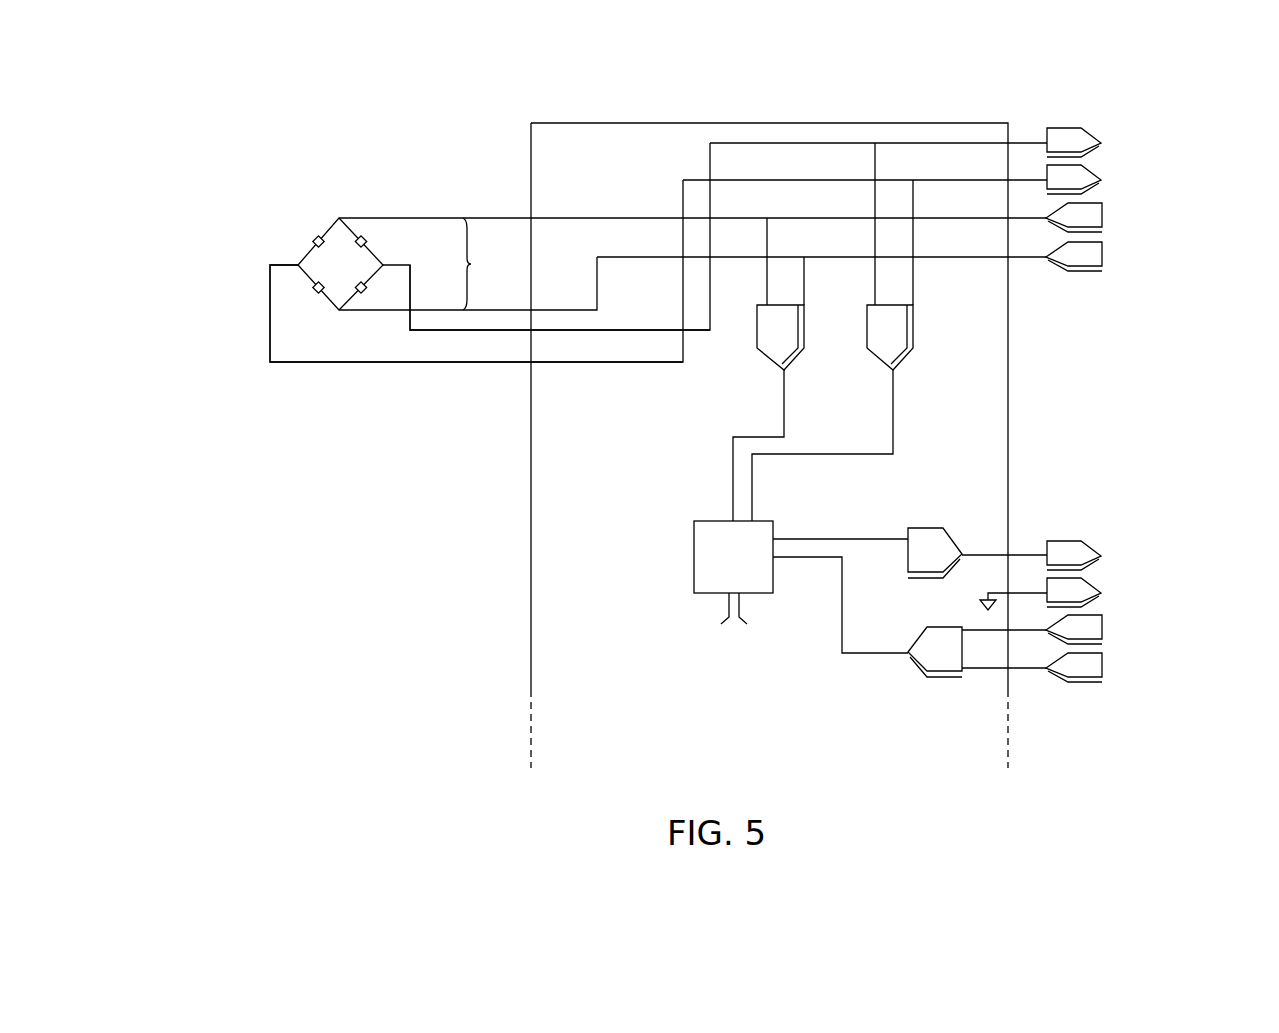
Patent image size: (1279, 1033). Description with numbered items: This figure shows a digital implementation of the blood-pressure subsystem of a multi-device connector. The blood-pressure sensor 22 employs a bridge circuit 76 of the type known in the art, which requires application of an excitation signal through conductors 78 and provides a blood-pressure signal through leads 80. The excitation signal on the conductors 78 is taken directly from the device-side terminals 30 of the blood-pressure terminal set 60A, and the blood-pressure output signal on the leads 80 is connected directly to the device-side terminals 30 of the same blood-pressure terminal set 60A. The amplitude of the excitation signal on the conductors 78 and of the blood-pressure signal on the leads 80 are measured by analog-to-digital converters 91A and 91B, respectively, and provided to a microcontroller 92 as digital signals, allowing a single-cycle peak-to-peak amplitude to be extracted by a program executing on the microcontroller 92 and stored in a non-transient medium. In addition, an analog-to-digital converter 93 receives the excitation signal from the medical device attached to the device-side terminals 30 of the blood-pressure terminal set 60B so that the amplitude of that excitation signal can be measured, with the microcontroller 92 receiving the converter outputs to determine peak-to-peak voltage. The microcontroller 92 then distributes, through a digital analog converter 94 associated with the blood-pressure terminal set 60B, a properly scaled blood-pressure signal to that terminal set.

The blood-pressure sensor 22 is at (333, 194).
The bridge circuit 76 is at (267, 256).
The conductors 78 is at (482, 264).
The leads 80 is at (388, 268).
The analog-to-digital converter 91A is at (790, 370).
The analog-to-digital converter 91B is at (900, 370).
The microcontroller 92 is at (746, 568).
The analog-to-digital converter 93 is at (940, 665).
The digital analog converter 94 is at (928, 550).
The device-side terminals 30 is at (1070, 107).
The blood-pressure terminal set 60A is at (1142, 156).
The blood-pressure terminal set 60B is at (1171, 538).